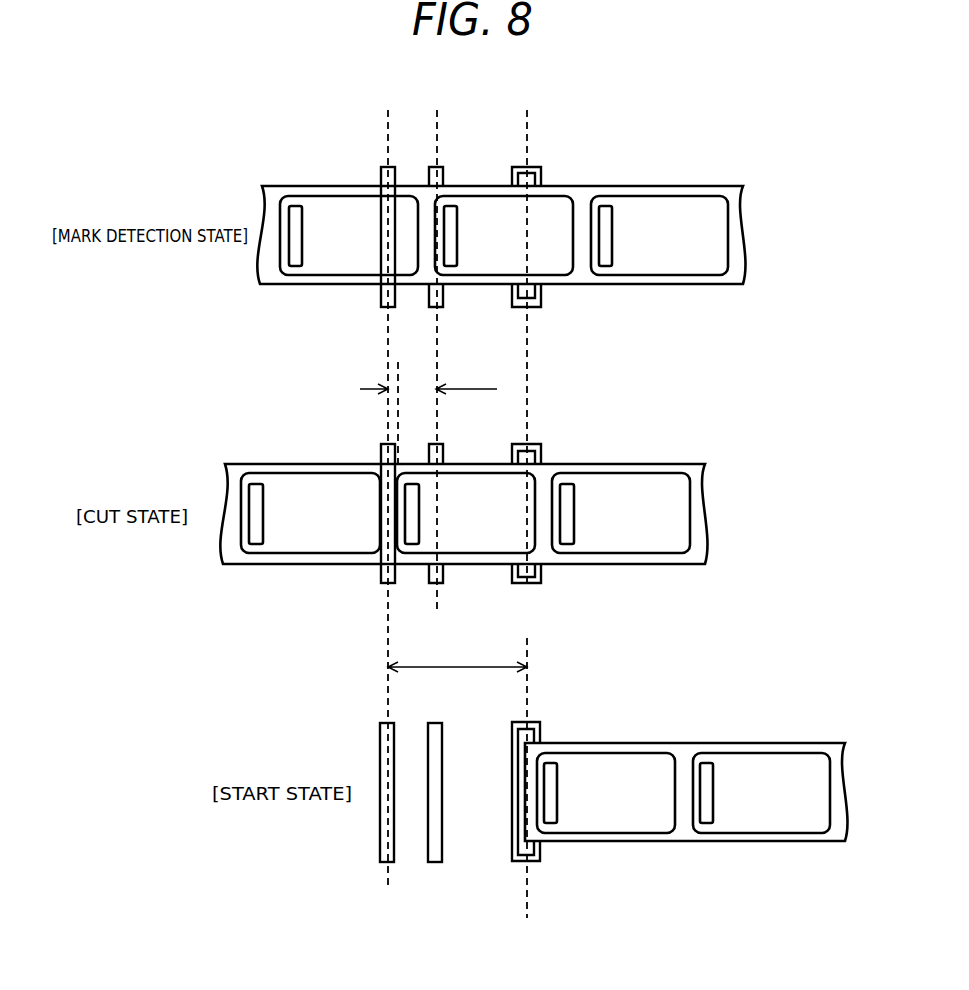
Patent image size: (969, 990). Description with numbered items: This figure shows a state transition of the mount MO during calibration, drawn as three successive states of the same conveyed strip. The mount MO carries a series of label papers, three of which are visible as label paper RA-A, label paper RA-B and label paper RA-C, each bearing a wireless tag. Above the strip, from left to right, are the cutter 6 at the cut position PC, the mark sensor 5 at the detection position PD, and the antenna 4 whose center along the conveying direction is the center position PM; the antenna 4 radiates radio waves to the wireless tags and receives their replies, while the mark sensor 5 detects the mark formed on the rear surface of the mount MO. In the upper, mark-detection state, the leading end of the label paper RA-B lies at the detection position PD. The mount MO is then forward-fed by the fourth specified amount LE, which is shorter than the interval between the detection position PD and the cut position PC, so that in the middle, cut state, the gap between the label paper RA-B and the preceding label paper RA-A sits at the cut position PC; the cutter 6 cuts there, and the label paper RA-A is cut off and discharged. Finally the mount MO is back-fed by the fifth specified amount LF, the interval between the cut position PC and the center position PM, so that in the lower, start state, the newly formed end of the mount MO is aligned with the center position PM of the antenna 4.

The antenna 4 is at (542, 177).
The mark sensor 5 is at (443, 177).
The cutter 6 is at (381, 177).
The mount MO is at (724, 187).
The label paper RA-A is at (333, 276).
The label paper RA-B is at (552, 278).
The label paper RA-C is at (663, 278).
The cut position PC is at (385, 485).
The detection position PD is at (435, 347).
The center position PM is at (522, 513).
The fourth specified amount LE is at (428, 376).
The fifth specified amount LF is at (457, 656).